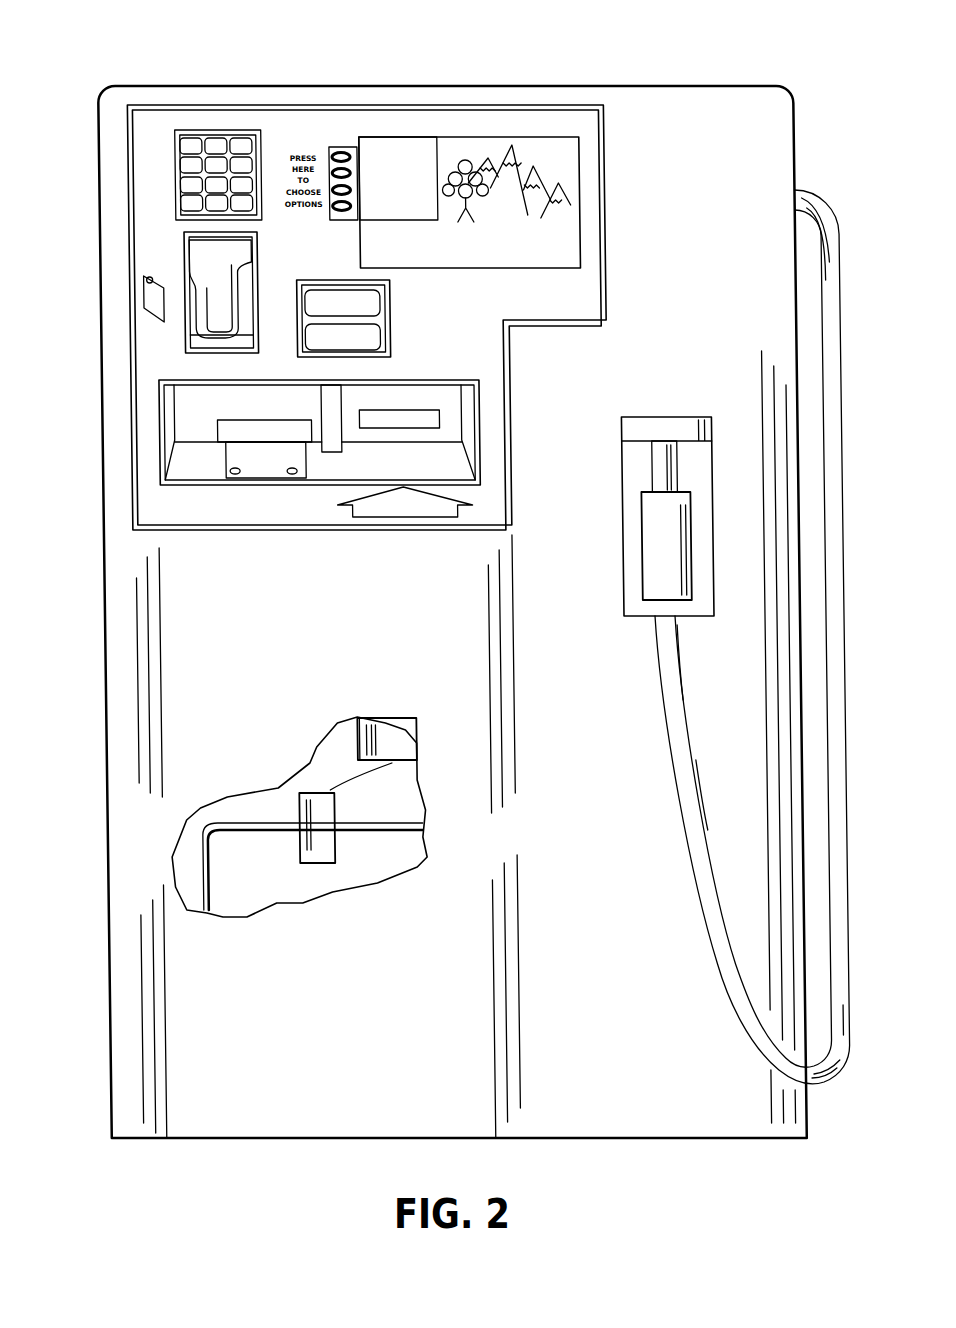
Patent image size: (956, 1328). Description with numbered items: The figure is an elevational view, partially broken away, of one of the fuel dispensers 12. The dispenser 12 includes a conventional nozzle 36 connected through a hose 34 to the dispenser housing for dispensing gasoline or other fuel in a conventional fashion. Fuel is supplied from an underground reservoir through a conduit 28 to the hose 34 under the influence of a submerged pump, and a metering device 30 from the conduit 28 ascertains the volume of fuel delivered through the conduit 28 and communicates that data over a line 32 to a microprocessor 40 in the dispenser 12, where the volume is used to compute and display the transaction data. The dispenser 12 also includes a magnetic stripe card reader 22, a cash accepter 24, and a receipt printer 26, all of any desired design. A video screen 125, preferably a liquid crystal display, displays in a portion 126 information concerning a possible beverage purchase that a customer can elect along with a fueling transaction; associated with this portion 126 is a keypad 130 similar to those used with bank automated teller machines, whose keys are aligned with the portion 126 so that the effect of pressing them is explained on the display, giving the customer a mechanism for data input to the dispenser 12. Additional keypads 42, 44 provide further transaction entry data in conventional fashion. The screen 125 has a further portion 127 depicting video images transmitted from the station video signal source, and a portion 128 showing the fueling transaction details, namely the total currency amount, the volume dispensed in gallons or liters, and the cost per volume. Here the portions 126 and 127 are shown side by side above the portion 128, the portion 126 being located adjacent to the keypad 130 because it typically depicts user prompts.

The dispenser 12 is at (541, 62).
The magnetic stripe card reader 22 is at (202, 252).
The cash accepter 24 is at (222, 432).
The receipt printer 26 is at (375, 420).
The conduit 28 is at (196, 857).
The metering device 30 is at (320, 793).
The line 32 is at (350, 773).
The hose 34 is at (819, 1078).
The nozzle 36 is at (650, 584).
The microprocessor 40 is at (385, 735).
The keypad 42 is at (213, 137).
The keypad 44 is at (312, 343).
The video screen 125 is at (555, 159).
The portion of the screen 126 is at (412, 150).
The portion of the screen 127 is at (543, 170).
The portion of the screen 128 is at (564, 237).
The keypad 130 is at (340, 150).